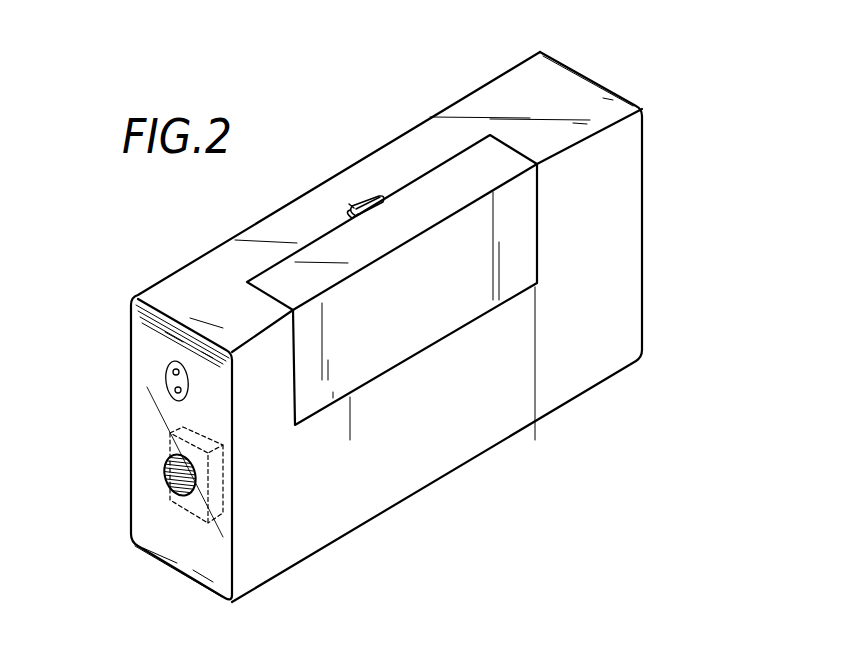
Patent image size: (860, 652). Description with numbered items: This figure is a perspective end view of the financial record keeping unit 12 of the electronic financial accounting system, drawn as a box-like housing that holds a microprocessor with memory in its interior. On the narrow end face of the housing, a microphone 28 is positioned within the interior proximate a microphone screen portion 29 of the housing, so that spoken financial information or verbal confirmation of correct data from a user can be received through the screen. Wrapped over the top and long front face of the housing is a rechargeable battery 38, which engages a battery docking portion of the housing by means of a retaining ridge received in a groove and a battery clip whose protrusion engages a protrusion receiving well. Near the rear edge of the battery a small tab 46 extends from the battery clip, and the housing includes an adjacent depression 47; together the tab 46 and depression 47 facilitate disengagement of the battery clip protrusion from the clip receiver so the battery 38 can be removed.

The financial record keeping unit 12 is at (490, 481).
The microphone 28 is at (198, 437).
The microphone screen portion 29 is at (168, 472).
The rechargeable battery 38 is at (468, 170).
The tab 46 is at (367, 200).
The depression 47 is at (348, 203).